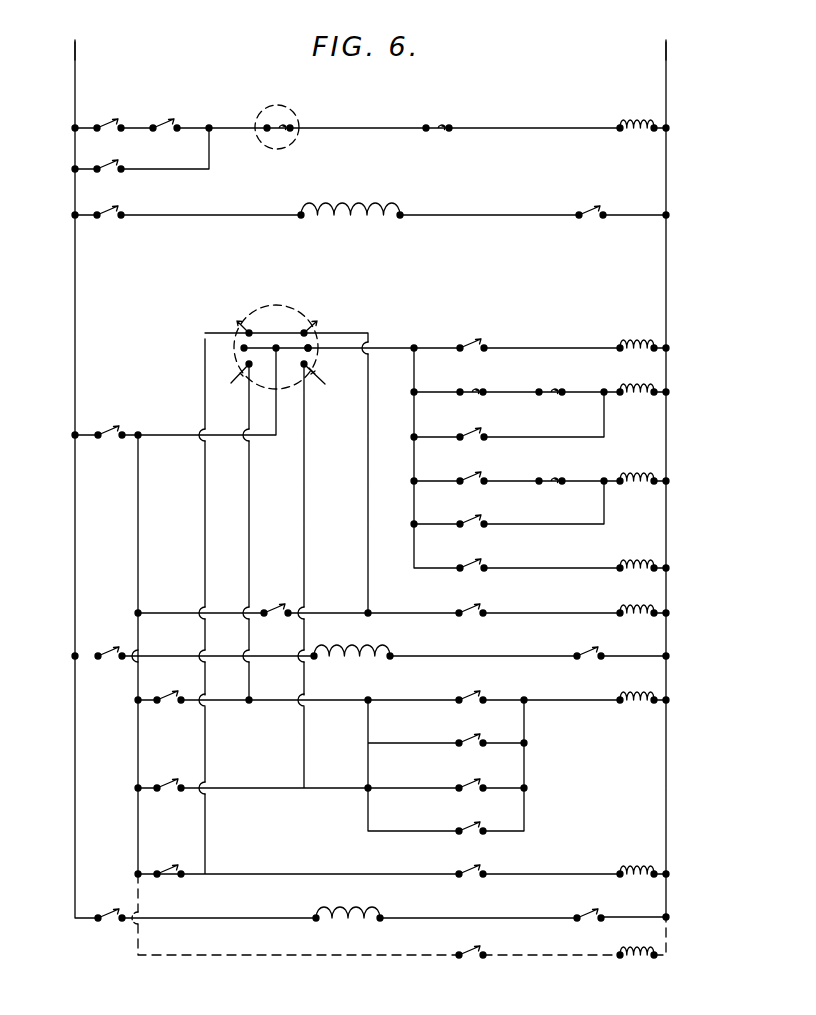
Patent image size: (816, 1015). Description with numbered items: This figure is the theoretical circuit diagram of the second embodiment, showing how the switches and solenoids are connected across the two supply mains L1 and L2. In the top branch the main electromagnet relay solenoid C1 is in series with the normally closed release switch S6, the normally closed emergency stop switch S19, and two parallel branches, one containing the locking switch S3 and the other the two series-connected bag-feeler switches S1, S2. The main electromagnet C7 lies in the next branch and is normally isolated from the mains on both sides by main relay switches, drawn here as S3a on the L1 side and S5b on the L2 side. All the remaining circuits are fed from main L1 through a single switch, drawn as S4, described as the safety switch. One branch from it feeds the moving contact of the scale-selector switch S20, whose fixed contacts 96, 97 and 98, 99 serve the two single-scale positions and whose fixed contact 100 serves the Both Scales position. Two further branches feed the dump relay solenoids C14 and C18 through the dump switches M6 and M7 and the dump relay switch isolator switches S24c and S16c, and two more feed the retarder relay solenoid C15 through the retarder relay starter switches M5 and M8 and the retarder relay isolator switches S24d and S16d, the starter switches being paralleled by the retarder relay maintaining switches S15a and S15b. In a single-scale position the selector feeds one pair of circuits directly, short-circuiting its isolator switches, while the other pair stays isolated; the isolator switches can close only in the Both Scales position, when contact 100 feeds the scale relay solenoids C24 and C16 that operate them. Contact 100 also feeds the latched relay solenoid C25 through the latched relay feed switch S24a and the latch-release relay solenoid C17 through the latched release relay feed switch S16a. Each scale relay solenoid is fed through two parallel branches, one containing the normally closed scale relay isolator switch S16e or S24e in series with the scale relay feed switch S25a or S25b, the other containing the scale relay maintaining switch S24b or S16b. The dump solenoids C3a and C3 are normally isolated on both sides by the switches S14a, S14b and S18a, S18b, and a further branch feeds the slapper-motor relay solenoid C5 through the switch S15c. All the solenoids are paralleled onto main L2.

The supply main L1 is at (72, 42).
The supply main L2 is at (665, 40).
The bag-feeler switch S1 is at (109, 117).
The bag-feeler switch S2 is at (165, 117).
The emergency stop switch S19 is at (277, 127).
The release switch S6 is at (437, 116).
The main electromagnet relay solenoid C1 is at (637, 116).
The locking switch S3 is at (109, 158).
The switch contact S3a is at (108, 203).
The main electromagnet C7 is at (350, 199).
The main relay switch S5b is at (592, 203).
The scale-selector switch S20 is at (276, 347).
The fixed contact 96 is at (233, 385).
The fixed contact 97 is at (318, 322).
The fixed contact 98 is at (235, 323).
The fixed contact 99 is at (320, 385).
The fixed contact 100 is at (310, 350).
The latched relay feed switch S24a is at (477, 336).
The latched relay solenoid C25 is at (637, 336).
The scale relay feed switch S25a is at (477, 381).
The scale relay isolator switch S16e is at (558, 381).
The scale relay solenoid C24 is at (637, 381).
The scale relay maintaining switch S24b is at (477, 425).
The scale relay feed switch S25b is at (477, 469).
The scale relay isolator switch S24e is at (558, 469).
The scale relay solenoid C16 is at (637, 469).
The scale relay maintaining switch S16b is at (477, 512).
The latched release relay feed switch S16a is at (477, 556).
The latch-release relay solenoid C17 is at (637, 556).
The switch S4 is at (109, 423).
The dump relay switch isolator switch S24c is at (280, 602).
The dump switch M6 is at (471, 601).
The dump relay solenoid C14 is at (637, 601).
The switch S14a is at (114, 644).
The dump solenoid C3a is at (352, 641).
The switch S14b is at (593, 644).
The retarder relay isolator switch S24d is at (173, 688).
The retarder relay starter switch M5 is at (471, 688).
The retarder relay solenoid C15 is at (637, 688).
The retarder relay maintaining switch S15a is at (477, 731).
The retarder relay isolator switch S16d is at (173, 776).
The retarder relay starter switch M8 is at (471, 776).
The retarder relay maintaining switch S15b is at (477, 819).
The dump relay switch isolator switch S16c is at (175, 862).
The dump switch M7 is at (471, 862).
The dump relay solenoid C18 is at (637, 862).
The switch S18a is at (111, 906).
The dump solenoid C3 is at (348, 903).
The switch S18b is at (593, 906).
The switch S15c is at (477, 943).
The slapper-motor relay solenoid C5 is at (637, 943).